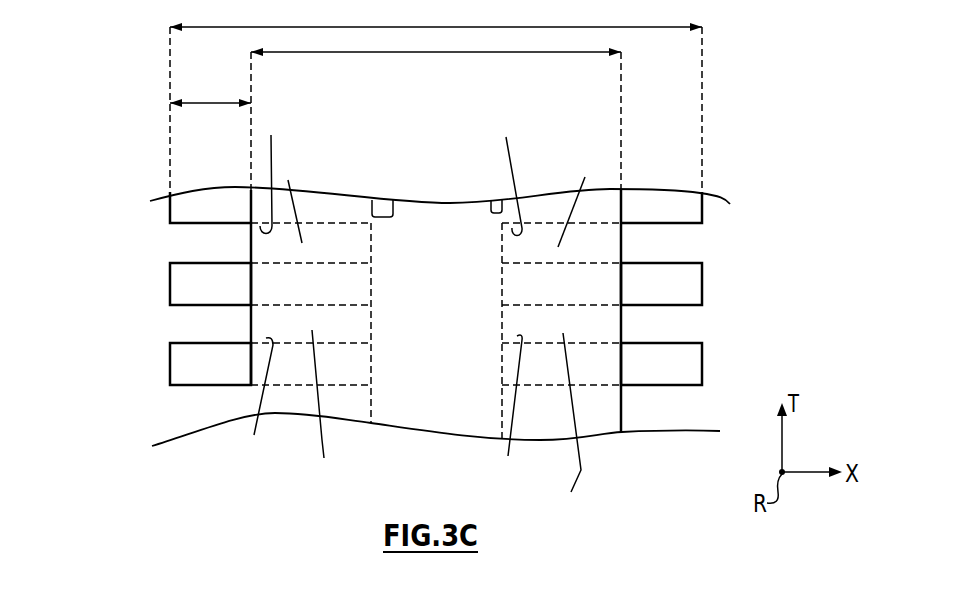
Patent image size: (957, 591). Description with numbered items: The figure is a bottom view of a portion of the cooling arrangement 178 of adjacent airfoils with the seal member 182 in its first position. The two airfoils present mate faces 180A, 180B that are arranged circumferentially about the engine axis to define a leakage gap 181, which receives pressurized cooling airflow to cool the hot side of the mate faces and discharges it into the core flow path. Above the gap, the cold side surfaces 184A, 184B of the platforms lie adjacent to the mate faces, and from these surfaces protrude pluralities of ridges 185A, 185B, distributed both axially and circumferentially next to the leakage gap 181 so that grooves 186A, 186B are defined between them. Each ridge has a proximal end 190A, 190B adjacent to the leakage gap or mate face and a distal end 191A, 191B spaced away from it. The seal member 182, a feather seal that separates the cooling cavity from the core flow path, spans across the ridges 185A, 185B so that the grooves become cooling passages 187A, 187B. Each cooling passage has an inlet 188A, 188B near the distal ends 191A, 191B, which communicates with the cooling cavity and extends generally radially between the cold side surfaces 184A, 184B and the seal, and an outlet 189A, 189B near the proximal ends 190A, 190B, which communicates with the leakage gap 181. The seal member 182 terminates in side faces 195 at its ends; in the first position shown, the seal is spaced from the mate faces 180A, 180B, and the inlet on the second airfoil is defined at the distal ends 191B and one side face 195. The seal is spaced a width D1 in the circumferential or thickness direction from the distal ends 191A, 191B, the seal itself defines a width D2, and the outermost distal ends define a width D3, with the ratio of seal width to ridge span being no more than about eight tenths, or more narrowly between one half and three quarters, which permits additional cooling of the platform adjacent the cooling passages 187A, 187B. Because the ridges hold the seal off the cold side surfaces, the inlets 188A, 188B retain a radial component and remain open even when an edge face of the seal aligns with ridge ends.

The airfoil section 178 is at (487, 118).
The mate face 180A is at (372, 200).
The mate face 180B is at (492, 203).
The leakage gap 181 is at (461, 322).
The seal member 182 is at (251, 204).
The cold side surface 184A is at (183, 412).
The cold side surface 184B is at (668, 412).
The ridges 185A is at (178, 278).
The ridges 185B is at (700, 277).
The grooves 186A is at (296, 170).
The grooves 186B is at (576, 507).
The cooling passages 187A is at (284, 124).
The cooling passages 187B is at (513, 127).
The inlet 188A is at (251, 334).
The inlet 188B is at (621, 253).
The outlet 189A is at (371, 257).
The outlet 189B is at (502, 352).
The proximal end 190A is at (392, 212).
The proximal end 190B is at (447, 448).
The distal end 191A is at (172, 294).
The distal end 191B is at (702, 298).
The side faces 195 is at (251, 399).
The width D1 is at (201, 100).
The width D2 is at (407, 53).
The width D3 is at (638, 29).